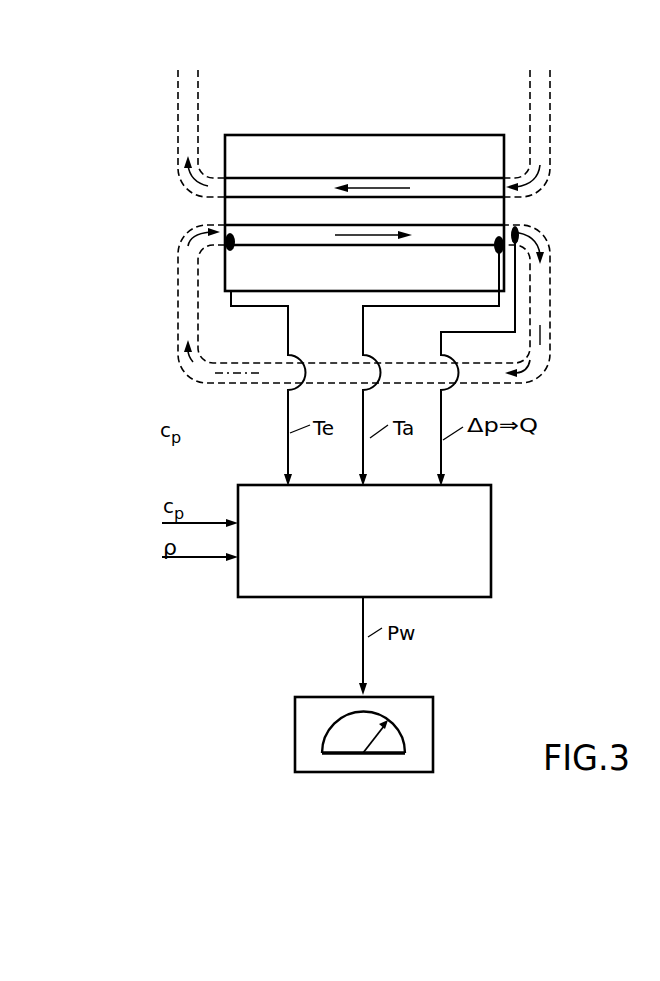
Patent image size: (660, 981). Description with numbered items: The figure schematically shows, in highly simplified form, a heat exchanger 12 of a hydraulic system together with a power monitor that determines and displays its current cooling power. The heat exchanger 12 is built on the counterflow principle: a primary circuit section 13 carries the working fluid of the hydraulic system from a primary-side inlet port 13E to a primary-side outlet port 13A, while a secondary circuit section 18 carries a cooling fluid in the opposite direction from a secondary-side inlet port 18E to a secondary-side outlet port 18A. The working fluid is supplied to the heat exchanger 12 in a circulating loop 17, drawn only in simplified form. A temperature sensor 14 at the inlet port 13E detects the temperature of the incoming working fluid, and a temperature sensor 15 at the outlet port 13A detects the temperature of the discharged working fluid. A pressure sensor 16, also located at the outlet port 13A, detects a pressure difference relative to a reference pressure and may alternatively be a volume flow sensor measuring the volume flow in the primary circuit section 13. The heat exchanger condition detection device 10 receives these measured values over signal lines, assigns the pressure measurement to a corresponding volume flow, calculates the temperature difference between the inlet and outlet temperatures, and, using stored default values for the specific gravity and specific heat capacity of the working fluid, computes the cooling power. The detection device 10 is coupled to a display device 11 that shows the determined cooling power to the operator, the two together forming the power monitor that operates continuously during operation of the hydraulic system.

The heat exchanger condition detection device 10 is at (491, 517).
The display device 11 is at (433, 707).
The heat exchanger 12 is at (390, 135).
The primary circuit section 13 is at (333, 247).
The primary-side outlet port 13A is at (513, 222).
The primary-side inlet port 13E is at (218, 226).
The temperature sensor 14 is at (235, 247).
The temperature sensor 15 is at (494, 248).
The pressure sensor 16 is at (520, 230).
The circulating loop 17 is at (552, 283).
The secondary circuit section 18 is at (322, 177).
The secondary-side outlet port 18A is at (228, 177).
The secondary-side inlet port 18E is at (503, 185).